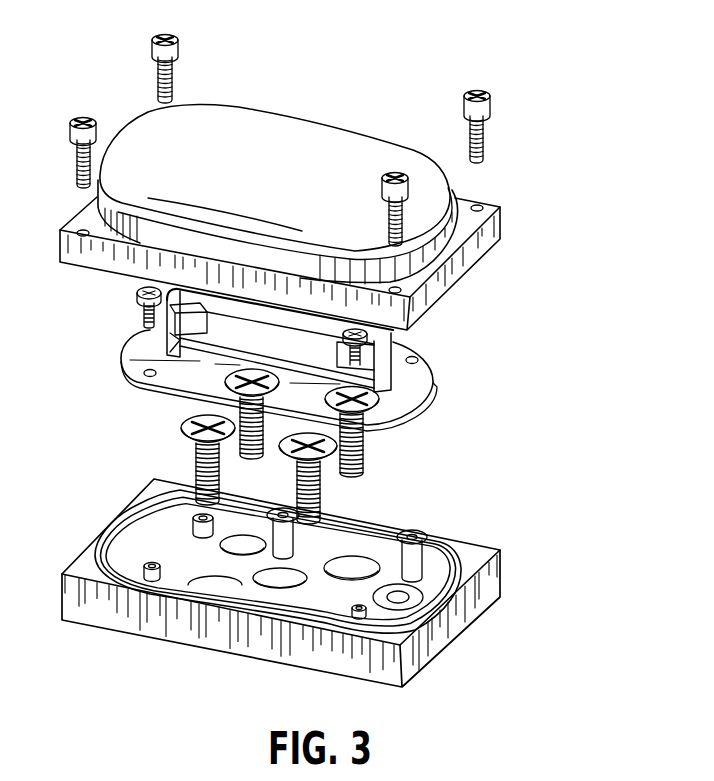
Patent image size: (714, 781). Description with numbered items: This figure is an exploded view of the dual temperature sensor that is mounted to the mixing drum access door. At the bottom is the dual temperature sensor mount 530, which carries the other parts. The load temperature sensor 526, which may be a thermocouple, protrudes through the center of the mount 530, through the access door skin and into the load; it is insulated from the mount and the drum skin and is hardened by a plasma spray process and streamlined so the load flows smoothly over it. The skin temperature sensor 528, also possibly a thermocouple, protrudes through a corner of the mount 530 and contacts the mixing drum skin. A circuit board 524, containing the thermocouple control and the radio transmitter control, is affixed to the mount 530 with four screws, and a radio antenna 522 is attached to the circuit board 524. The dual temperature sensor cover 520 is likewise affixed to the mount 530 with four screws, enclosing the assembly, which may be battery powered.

The dual temperature sensor cover 520 is at (496, 222).
The radio antenna 522 is at (372, 340).
The circuit board 524 is at (425, 372).
The load temperature sensor 526 is at (321, 491).
The skin temperature sensor 528 is at (413, 530).
The dual temperature sensor mount 530 is at (314, 583).